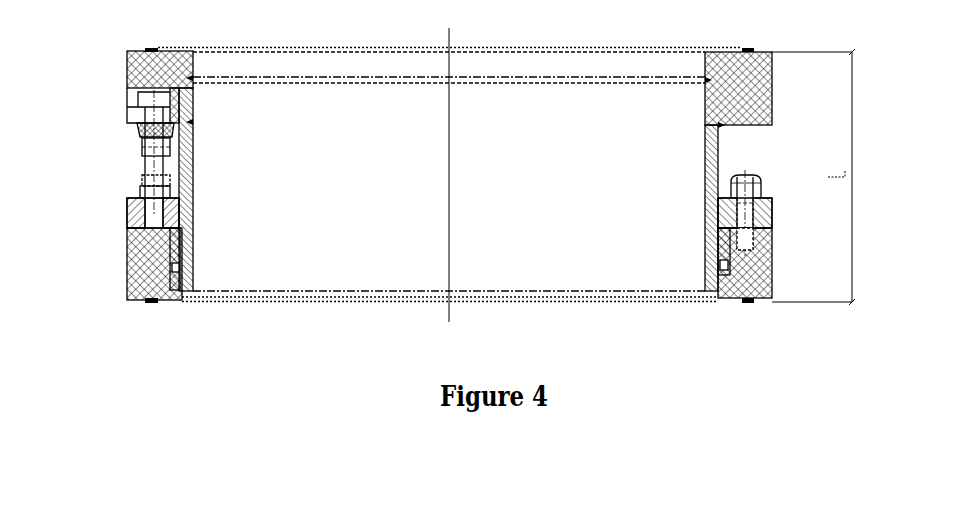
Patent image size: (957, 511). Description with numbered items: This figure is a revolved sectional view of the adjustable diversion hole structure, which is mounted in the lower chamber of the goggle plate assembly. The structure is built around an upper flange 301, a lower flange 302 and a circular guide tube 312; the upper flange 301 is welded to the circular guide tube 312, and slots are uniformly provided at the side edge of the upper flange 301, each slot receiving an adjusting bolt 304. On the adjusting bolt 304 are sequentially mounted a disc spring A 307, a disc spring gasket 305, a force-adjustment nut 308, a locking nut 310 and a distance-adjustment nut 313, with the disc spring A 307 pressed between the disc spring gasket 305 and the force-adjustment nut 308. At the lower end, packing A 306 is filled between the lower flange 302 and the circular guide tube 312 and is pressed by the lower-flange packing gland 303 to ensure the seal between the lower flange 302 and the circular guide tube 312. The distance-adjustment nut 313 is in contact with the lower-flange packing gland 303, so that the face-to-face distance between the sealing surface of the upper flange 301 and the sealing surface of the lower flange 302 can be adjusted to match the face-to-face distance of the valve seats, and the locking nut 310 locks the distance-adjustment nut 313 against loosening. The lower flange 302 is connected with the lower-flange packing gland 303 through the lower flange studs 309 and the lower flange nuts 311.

The upper flange 301 is at (752, 88).
The lower flange 302 is at (143, 301).
The lower-flange packing gland 303 is at (820, 220).
The adjusting bolt 304 is at (147, 160).
The disc spring gasket 305 is at (138, 120).
The packing A 306 is at (127, 290).
The disc spring A 307 is at (140, 121).
The force-adjustment nut 308 is at (140, 128).
The lower flange stud 309 is at (820, 262).
The locking nut 310 is at (148, 193).
The lower flange nut 311 is at (742, 185).
The circular guide tube 312 is at (718, 148).
The distance-adjustment nut 313 is at (127, 228).